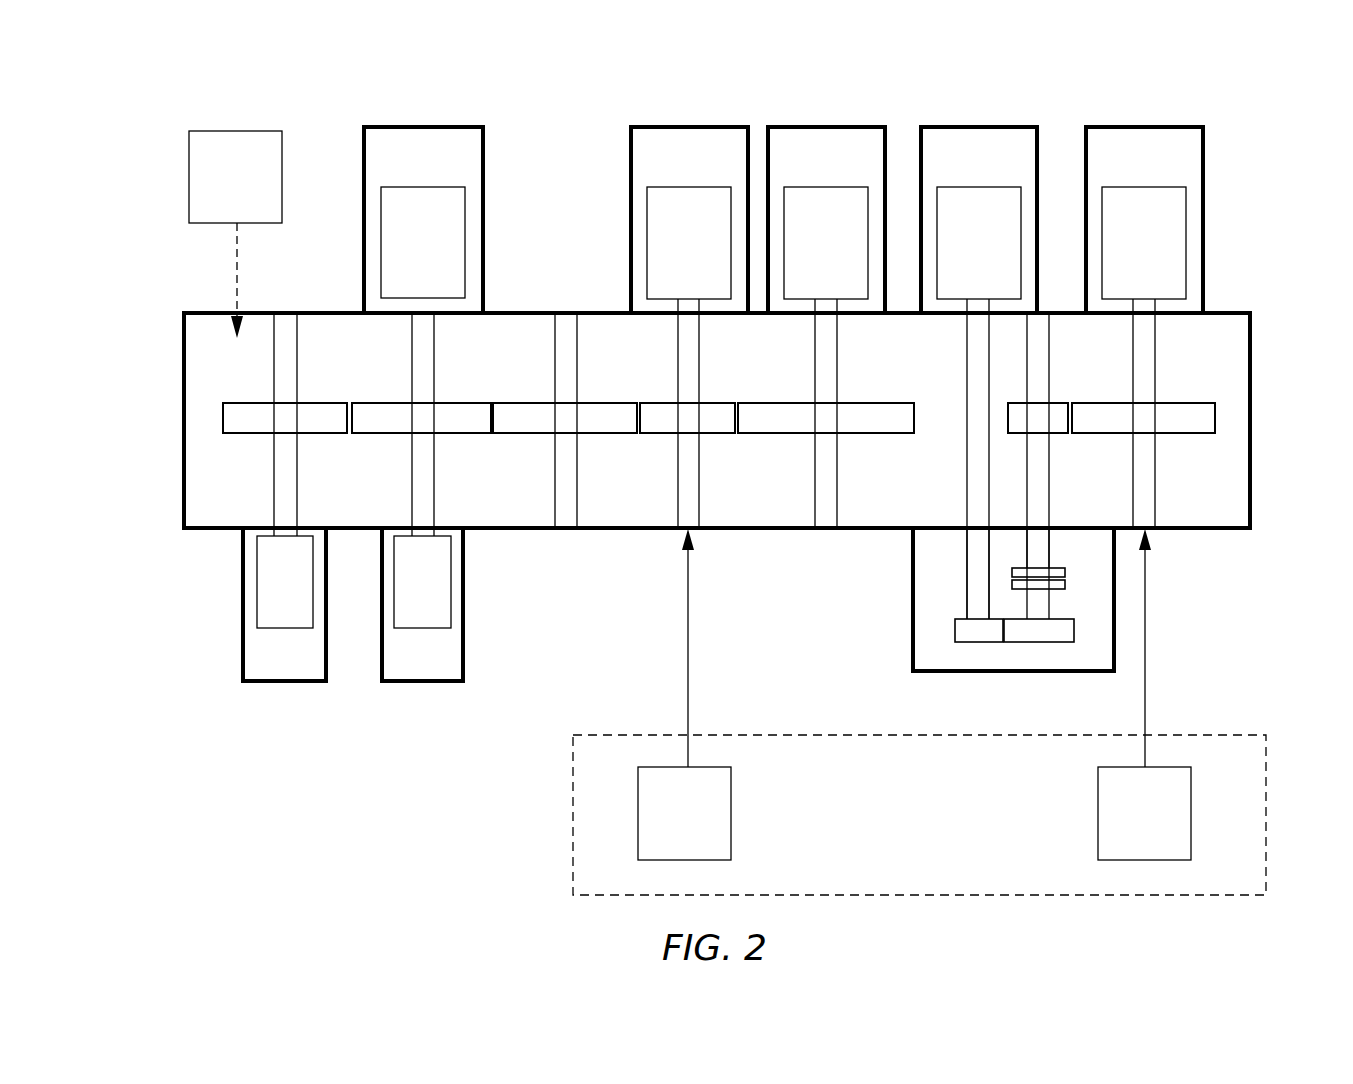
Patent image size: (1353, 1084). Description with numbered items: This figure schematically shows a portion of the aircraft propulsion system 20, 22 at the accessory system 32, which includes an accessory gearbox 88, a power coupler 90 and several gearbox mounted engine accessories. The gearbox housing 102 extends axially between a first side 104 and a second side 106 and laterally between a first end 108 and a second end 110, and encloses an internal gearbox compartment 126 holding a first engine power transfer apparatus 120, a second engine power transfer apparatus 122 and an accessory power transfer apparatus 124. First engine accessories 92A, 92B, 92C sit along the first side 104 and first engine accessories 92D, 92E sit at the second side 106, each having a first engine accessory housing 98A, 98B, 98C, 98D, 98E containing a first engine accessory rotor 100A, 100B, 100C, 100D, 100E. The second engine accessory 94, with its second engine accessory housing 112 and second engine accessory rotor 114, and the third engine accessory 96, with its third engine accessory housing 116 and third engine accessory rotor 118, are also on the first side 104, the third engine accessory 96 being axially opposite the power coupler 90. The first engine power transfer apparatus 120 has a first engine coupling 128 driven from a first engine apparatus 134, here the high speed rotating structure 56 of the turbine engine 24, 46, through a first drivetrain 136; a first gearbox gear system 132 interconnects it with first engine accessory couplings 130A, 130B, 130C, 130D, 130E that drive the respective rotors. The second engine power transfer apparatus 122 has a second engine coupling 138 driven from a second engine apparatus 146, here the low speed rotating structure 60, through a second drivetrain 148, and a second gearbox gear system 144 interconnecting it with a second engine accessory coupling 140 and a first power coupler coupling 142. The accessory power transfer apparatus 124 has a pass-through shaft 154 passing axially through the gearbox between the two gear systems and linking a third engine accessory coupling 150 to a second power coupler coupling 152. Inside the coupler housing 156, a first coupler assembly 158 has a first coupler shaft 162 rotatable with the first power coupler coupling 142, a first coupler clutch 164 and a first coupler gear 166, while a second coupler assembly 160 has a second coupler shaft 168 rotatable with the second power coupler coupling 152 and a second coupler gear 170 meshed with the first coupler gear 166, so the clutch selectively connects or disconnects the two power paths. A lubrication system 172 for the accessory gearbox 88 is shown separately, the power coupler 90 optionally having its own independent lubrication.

The vehicle 20 is at (704, 468).
The drive system 22 is at (172, 80).
The turbine engine 24 is at (919, 793).
The accessory system 32 is at (1250, 88).
The control module 46 is at (802, 735).
The high speed rotating structure 56 is at (684, 813).
The low speed rotating structure 60 is at (1144, 813).
The accessory gearbox 88 is at (160, 320).
The power coupler 90 is at (888, 586).
The first engine accessory 92A is at (804, 171).
The first engine accessory 92B is at (667, 171).
The first engine accessory 92C is at (402, 171).
The first engine accessory 92D is at (235, 716).
The first engine accessory 92E is at (400, 664).
The second engine accessory 94 is at (1129, 171).
The third engine accessory 96 is at (964, 171).
The first engine accessory housing 98A is at (826, 194).
The first engine accessory housing 98B is at (689, 194).
The first engine accessory housing 98C is at (423, 195).
The first engine accessory housing 98D is at (261, 626).
The first engine accessory housing 98E is at (442, 626).
The first engine accessory rotor 100A is at (797, 251).
The first engine accessory rotor 100B is at (660, 251).
The first engine accessory rotor 100C is at (395, 251).
The first engine accessory rotor 100D is at (259, 596).
The first engine accessory rotor 100E is at (396, 596).
The gearbox housing 102 is at (1265, 348).
The gearbox first side 104 is at (1227, 313).
The gearbox second side 106 is at (1229, 528).
The gearbox first end 108 is at (184, 497).
The gearbox second end 110 is at (1251, 505).
The second engine accessory housing 112 is at (1144, 199).
The second engine accessory rotor 114 is at (1122, 251).
The third engine accessory housing 116 is at (981, 199).
The third engine accessory rotor 118 is at (957, 251).
The first engine power transfer apparatus 120 is at (210, 380).
The second engine power transfer apparatus 122 is at (1220, 390).
The accessory power transfer apparatus 124 is at (945, 485).
The internal gearbox compartment 126 is at (197, 496).
The first engine coupling 128 is at (680, 413).
The first engine accessory coupling 130A is at (813, 315).
The first engine accessory coupling 130B is at (675, 315).
The first engine accessory coupling 130C is at (471, 424).
The first engine accessory coupling 130D is at (297, 527).
The first engine accessory coupling 130E is at (435, 317).
The first gearbox gear system 132 is at (203, 419).
The first engine apparatus 134 is at (646, 826).
The first drivetrain 136 is at (690, 643).
The second engine coupling 138 is at (1183, 413).
The second engine accessory coupling 140 is at (1155, 315).
The first power coupler coupling 142 is at (1055, 466).
The second gearbox gear system 144 is at (1240, 418).
The second engine apparatus 146 is at (1106, 826).
The second drivetrain 148 is at (1145, 677).
The third engine accessory coupling 150 is at (965, 315).
The second power coupler coupling 152 is at (992, 527).
The pass-through shaft 154 is at (966, 418).
The coupler housing 156 is at (1014, 625).
The first coupler assembly 158 is at (1110, 670).
The second coupler assembly 160 is at (922, 670).
The first coupler shaft 162 is at (1050, 552).
The first coupler clutch 164 is at (1066, 582).
The first coupler gear 166 is at (1075, 632).
The second coupler shaft 168 is at (967, 573).
The second coupler gear 170 is at (978, 660).
The lubrication system 172 is at (214, 194).